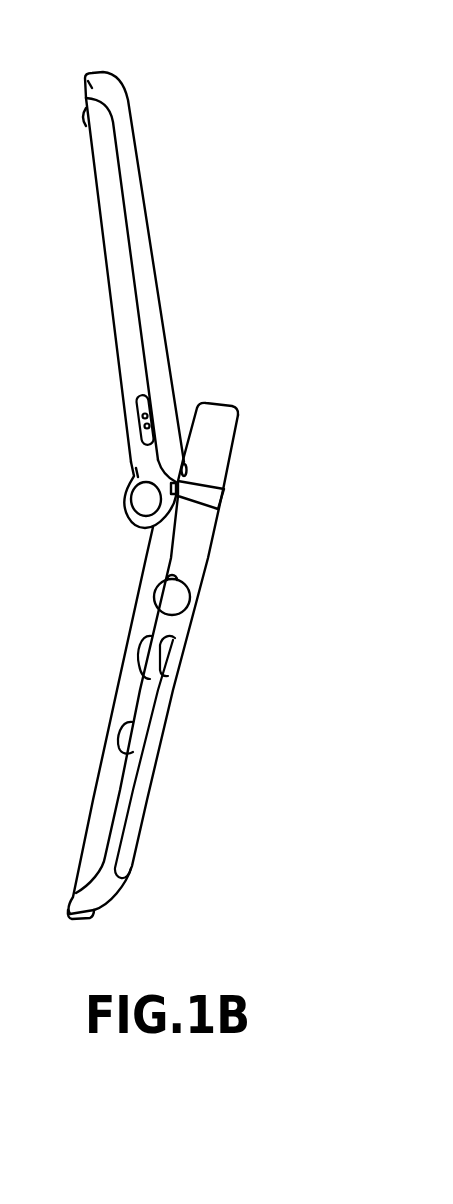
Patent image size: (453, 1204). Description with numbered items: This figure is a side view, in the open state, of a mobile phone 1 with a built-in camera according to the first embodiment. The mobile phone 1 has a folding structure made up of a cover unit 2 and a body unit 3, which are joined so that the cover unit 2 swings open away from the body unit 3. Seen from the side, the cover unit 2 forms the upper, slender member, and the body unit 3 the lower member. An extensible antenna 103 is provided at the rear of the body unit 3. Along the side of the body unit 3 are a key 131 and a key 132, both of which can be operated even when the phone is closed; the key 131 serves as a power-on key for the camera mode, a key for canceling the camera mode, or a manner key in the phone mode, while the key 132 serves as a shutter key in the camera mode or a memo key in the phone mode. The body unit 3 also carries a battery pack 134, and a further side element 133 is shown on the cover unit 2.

The mobile phone 1 is at (182, 112).
The cover unit 2 is at (156, 242).
The body unit 3 is at (193, 625).
The extensible antenna 103 is at (236, 433).
The key 131 is at (138, 660).
The key 132 is at (120, 741).
The operation pad 133 is at (142, 428).
The battery pack 134 is at (152, 748).